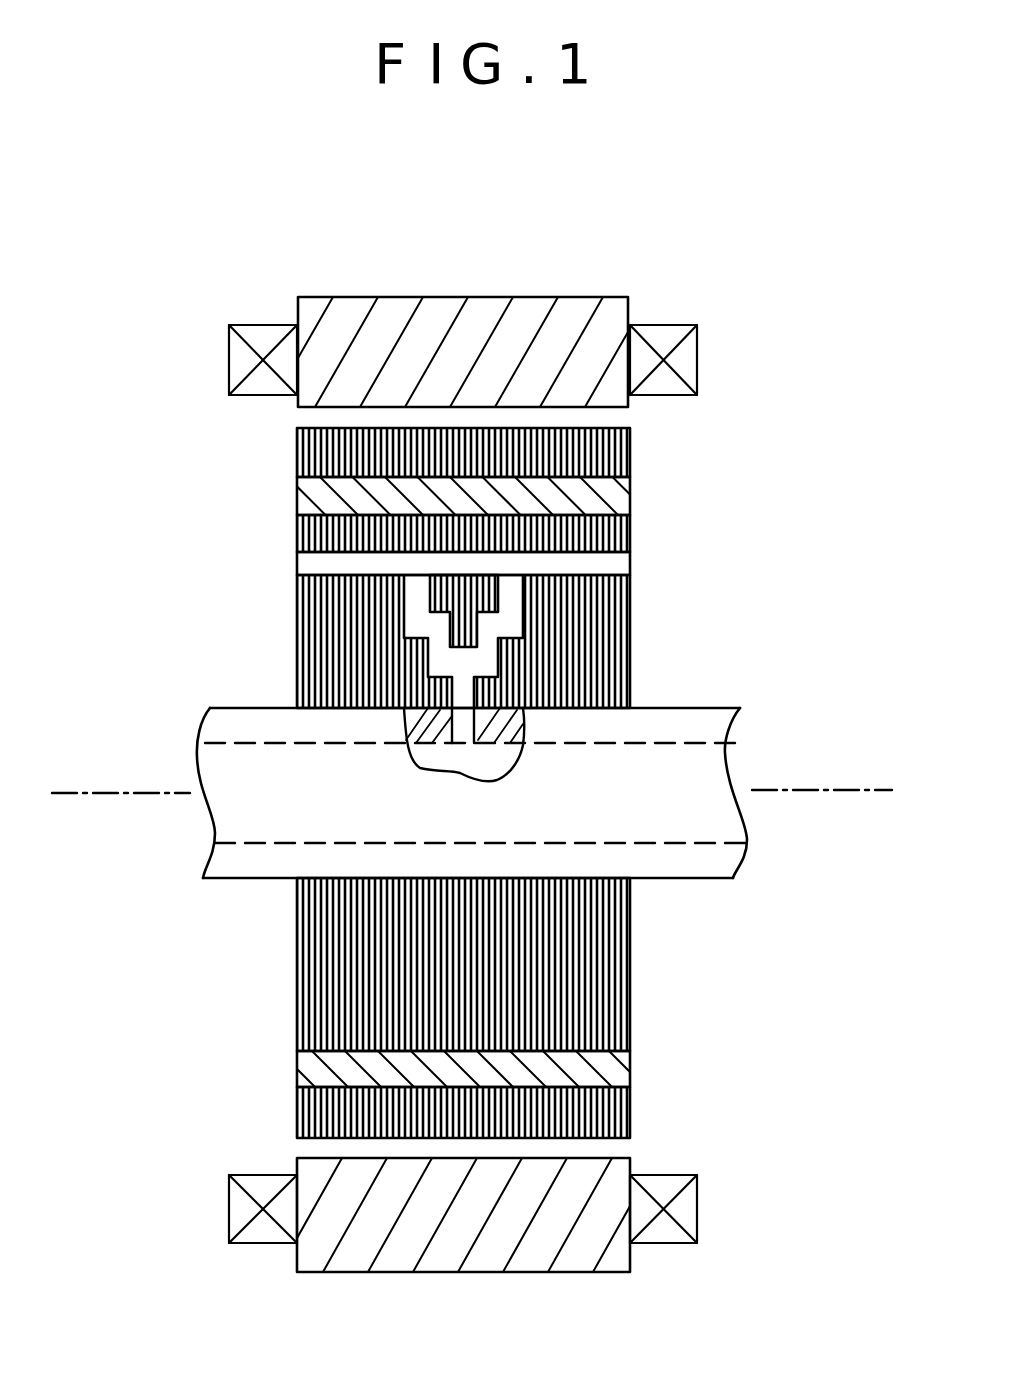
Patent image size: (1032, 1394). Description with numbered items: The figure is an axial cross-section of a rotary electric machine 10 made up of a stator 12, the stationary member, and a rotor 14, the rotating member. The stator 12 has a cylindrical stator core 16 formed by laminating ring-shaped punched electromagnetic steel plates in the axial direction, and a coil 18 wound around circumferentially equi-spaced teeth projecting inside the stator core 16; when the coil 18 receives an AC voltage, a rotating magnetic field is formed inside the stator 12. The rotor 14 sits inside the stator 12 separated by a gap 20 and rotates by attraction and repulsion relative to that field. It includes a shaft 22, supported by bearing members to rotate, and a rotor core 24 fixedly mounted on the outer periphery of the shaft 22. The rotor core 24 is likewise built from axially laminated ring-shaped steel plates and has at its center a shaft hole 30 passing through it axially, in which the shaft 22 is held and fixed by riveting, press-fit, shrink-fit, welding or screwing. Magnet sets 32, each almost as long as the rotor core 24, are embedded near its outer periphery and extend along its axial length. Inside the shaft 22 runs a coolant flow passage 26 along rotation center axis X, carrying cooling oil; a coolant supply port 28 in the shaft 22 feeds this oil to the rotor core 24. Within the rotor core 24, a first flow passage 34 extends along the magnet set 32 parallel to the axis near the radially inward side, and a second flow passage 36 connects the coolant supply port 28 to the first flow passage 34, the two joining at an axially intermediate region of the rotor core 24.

The rotary electric machine 10 is at (732, 250).
The stator 12 is at (600, 287).
The rotor 14 is at (657, 516).
The stator core 16 is at (441, 296).
The coil 18 is at (229, 360).
The gap 20 is at (310, 418).
The shaft 22 is at (703, 708).
The rotor core 24 is at (634, 437).
The coolant flow passage 26 is at (735, 749).
The coolant supply port 28 is at (462, 735).
The shaft hole 30 is at (618, 878).
The magnet set 32 is at (298, 497).
The first flow passage 34 is at (608, 565).
The second flow passage 36 is at (527, 601).